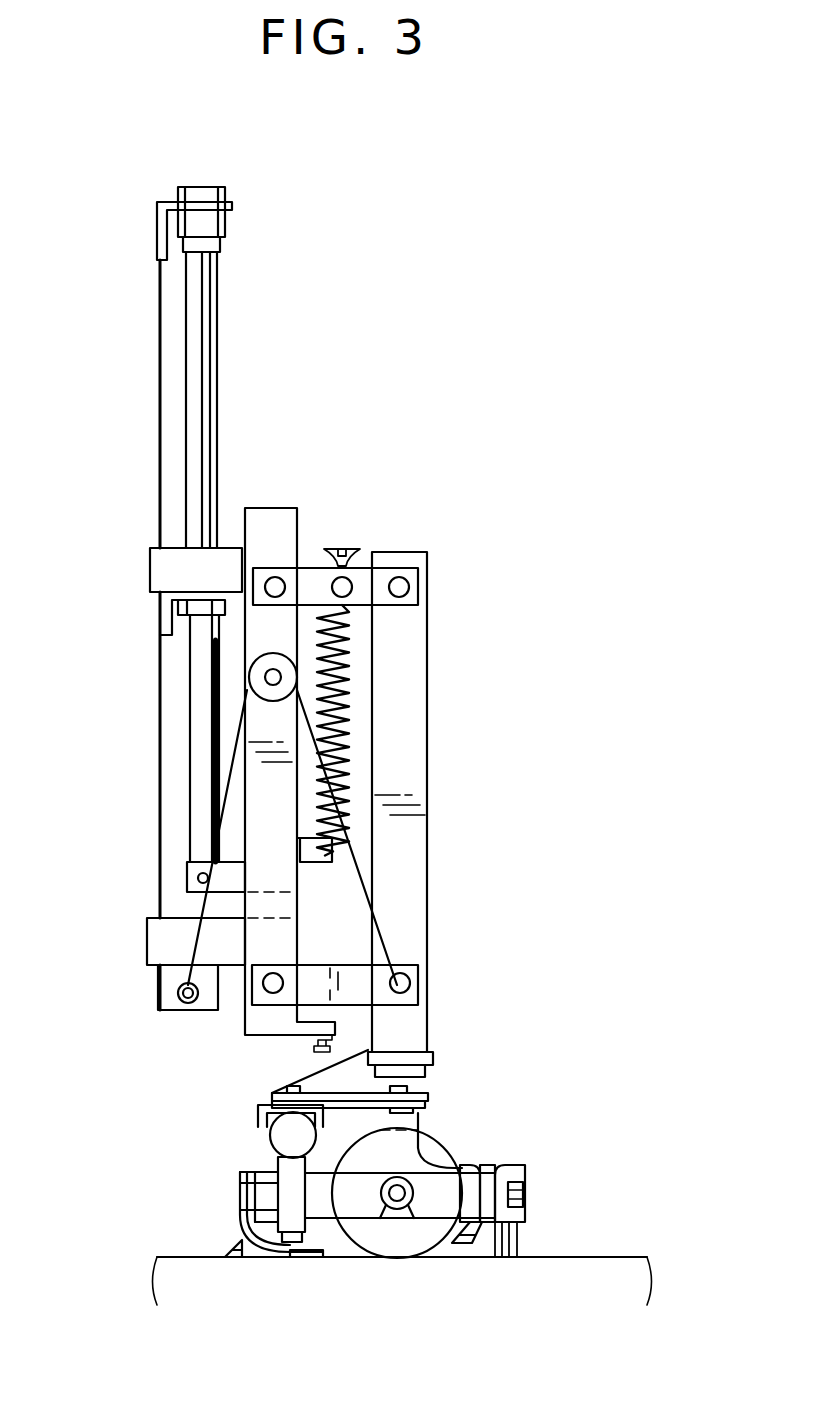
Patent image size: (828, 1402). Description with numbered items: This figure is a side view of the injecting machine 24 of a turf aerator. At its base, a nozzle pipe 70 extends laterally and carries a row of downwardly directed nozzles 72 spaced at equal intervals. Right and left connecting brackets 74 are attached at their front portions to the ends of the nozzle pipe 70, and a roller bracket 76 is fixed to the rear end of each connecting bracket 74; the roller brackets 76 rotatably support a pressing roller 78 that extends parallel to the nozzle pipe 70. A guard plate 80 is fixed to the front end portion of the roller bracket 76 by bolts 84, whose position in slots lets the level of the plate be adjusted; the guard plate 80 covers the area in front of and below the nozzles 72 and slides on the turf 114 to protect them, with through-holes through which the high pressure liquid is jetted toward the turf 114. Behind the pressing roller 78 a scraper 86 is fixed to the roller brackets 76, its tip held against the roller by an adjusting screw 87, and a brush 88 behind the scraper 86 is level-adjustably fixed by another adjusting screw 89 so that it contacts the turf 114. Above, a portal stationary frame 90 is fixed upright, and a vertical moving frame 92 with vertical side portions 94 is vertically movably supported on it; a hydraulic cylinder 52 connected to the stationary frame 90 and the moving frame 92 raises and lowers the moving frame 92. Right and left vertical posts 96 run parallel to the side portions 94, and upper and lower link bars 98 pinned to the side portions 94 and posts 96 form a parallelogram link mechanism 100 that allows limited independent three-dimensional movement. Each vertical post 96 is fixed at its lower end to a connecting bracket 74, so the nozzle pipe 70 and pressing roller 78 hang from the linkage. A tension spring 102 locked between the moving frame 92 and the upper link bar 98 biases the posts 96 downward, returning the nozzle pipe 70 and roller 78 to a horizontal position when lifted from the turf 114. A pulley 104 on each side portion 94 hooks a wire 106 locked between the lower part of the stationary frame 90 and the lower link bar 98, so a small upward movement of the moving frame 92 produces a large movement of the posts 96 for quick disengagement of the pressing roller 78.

The vertical moving unit 24 is at (293, 294).
The hydraulic cylinder 52 is at (203, 342).
The nozzle pipe 70 is at (290, 1135).
The nozzle 72 is at (292, 1258).
The connecting bracket 74 is at (428, 1083).
The roller bracket 76 is at (420, 1118).
The pressing roller 78 is at (397, 1243).
The guard plate 80 is at (232, 1257).
The bolt 84 is at (240, 1210).
The scraper 86 is at (460, 1238).
The adjusting screw 87 is at (473, 1230).
The brush 88 is at (519, 1238).
The adjusting screw 89 is at (524, 1193).
The portal stationary frame 90 is at (158, 339).
The vertical moving frame 92 is at (273, 534).
The vertical side portion 94 is at (258, 637).
The vertical post 96 is at (397, 682).
The link bar 98 is at (377, 582).
The parallelogram link mechanism 100 is at (429, 735).
The tension spring 102 is at (343, 730).
The pulley 104 is at (264, 677).
The wire 106 is at (352, 837).
The turf 114 is at (610, 1250).